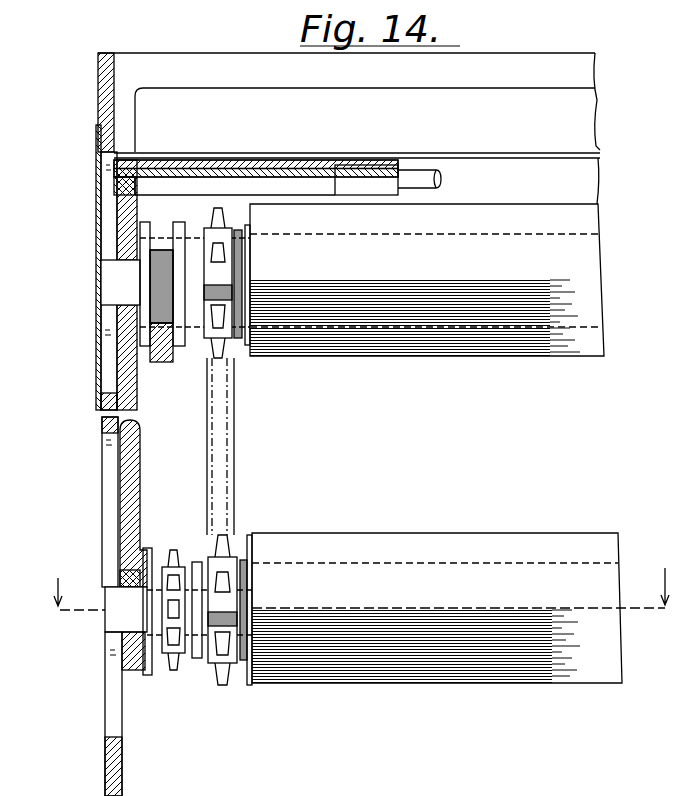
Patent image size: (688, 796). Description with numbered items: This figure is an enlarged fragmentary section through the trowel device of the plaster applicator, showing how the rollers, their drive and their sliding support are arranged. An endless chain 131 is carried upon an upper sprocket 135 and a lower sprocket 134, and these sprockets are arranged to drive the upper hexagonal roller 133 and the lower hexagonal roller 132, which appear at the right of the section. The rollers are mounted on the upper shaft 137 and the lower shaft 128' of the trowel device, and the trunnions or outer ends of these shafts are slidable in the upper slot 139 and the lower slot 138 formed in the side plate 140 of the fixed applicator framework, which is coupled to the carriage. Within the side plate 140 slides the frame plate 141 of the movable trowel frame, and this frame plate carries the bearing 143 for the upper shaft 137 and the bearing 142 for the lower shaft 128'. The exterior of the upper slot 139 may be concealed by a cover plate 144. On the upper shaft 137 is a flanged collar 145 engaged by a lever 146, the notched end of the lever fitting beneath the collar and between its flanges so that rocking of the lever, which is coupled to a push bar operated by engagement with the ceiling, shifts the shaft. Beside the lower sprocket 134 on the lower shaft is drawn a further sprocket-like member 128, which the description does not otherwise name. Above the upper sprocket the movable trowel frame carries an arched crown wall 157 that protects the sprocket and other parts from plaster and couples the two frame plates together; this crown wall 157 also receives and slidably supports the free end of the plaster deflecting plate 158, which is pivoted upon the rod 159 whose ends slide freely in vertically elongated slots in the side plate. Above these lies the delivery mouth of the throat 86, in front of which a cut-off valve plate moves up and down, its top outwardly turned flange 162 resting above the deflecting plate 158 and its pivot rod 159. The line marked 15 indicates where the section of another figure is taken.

The throat 86 is at (181, 53).
The cover plate 144 is at (96, 208).
The upper slot 139 is at (108, 353).
The bearing 143 is at (120, 318).
The upper shaft 137 is at (108, 282).
The outwardly turned flange 162 is at (290, 166).
The crown wall 157 is at (250, 172).
The plaster deflecting plate 158 is at (373, 176).
The rod 159 is at (443, 180).
The flanged collar 145 is at (160, 250).
The lever 146 is at (168, 362).
The upper sprocket 135 is at (232, 340).
The upper hexagonal roller 133 is at (602, 356).
The endless chain 131 is at (236, 458).
The lower slot 138 is at (108, 495).
The frame plate 141 is at (140, 495).
The bearing 142 is at (120, 578).
The lower shaft 128' is at (146, 628).
The side plate 140 is at (122, 770).
The sprocket 128 is at (172, 633).
The lower sprocket 134 is at (238, 665).
The lower hexagonal roller 132 is at (620, 683).
The section line 15 is at (360, 592).